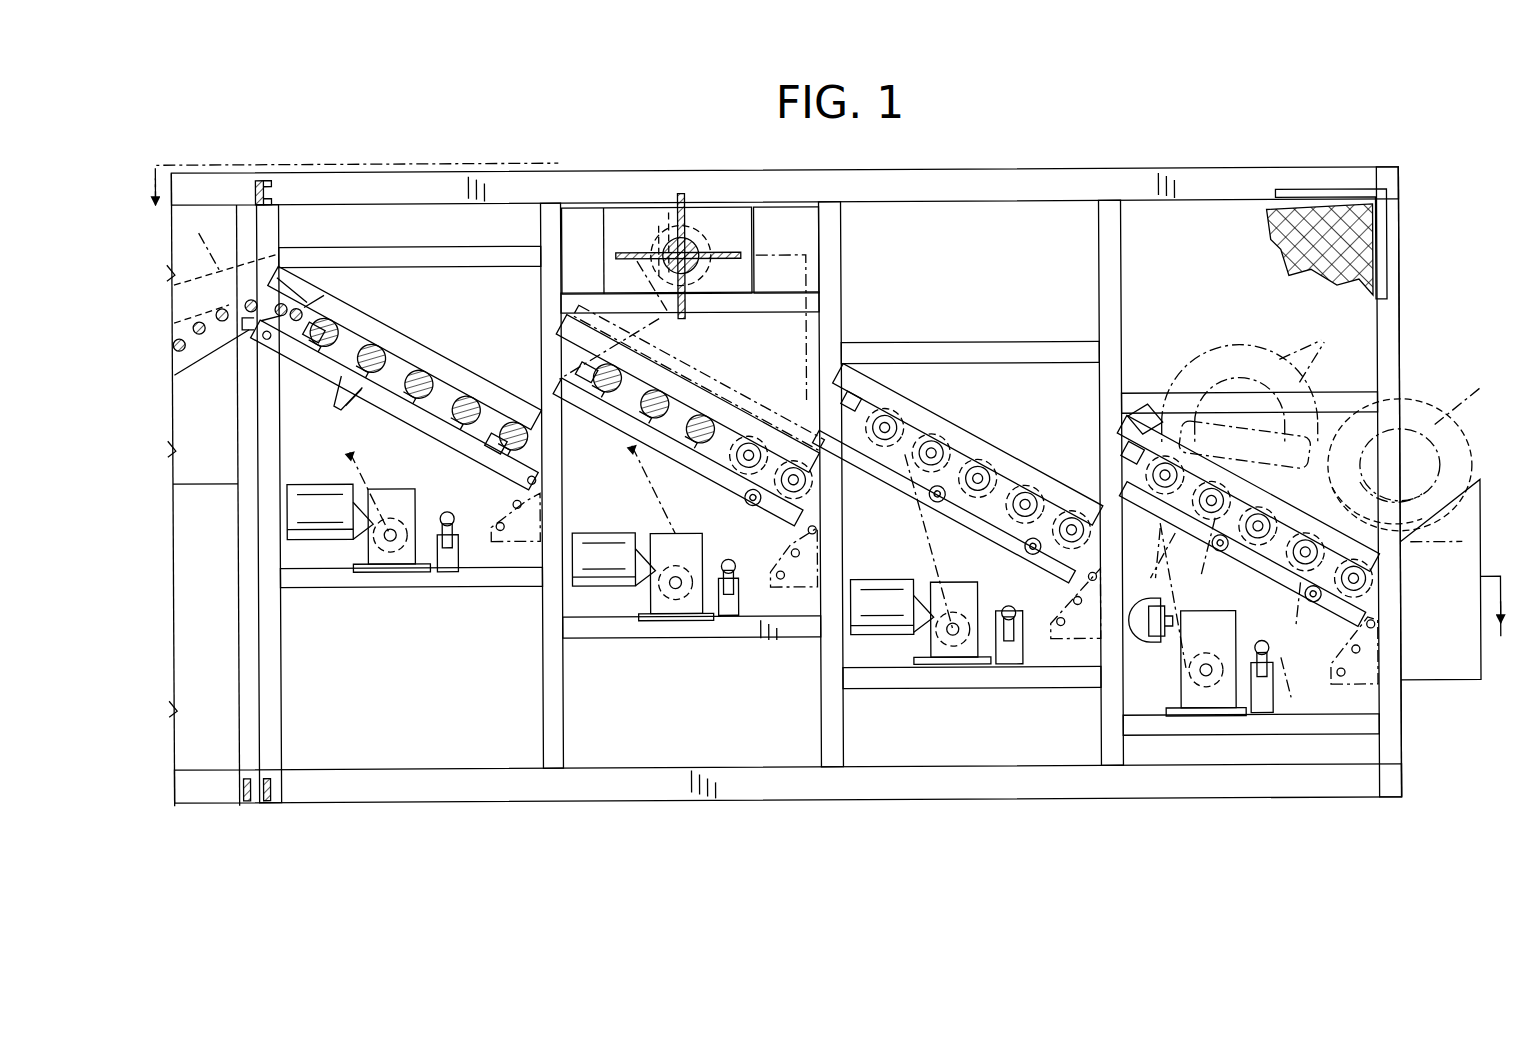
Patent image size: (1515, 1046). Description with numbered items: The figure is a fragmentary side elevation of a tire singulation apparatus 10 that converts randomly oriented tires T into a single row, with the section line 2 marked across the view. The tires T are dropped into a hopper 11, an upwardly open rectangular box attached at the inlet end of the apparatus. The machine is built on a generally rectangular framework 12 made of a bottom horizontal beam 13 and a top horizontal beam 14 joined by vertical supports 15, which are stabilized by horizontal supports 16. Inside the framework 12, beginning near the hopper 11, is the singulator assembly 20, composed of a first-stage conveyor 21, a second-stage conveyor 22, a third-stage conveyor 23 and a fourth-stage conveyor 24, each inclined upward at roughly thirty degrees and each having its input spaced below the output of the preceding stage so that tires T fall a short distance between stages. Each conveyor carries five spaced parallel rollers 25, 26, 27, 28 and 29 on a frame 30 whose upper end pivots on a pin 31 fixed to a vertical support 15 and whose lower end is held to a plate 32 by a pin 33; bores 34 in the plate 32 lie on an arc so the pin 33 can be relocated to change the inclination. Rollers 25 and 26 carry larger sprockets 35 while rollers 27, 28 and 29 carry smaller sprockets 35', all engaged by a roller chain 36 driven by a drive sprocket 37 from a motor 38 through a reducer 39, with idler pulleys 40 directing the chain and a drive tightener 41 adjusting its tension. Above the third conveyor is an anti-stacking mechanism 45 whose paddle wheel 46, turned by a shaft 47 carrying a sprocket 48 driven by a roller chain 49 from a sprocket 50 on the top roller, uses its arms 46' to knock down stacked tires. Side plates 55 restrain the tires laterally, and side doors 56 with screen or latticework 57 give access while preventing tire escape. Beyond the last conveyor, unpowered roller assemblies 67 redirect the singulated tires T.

The tire singulation apparatus 10 is at (1115, 120).
The hopper 11 is at (1450, 688).
The framework 12 is at (1240, 170).
The bottom horizontal beam 13 is at (862, 790).
The top horizontal beam 14 is at (382, 186).
The vertical supports 15 is at (548, 238).
The horizontal supports 16 is at (412, 250).
The singulator assembly 20 is at (955, 282).
The first-stage conveyor 21 is at (1190, 440).
The second-stage conveyor 22 is at (946, 414).
The third-stage conveyor 23 is at (722, 398).
The fourth-stage conveyor 24 is at (400, 340).
The roller 25 is at (1375, 592).
The roller 26 is at (1208, 625).
The roller 27 is at (1200, 559).
The roller 28 is at (1141, 553).
The roller 29 is at (1148, 410).
The frame 30 is at (1295, 612).
The pin 31 is at (1082, 456).
The plate 32 is at (1375, 667).
The pin 33 is at (1375, 627).
The bores 34 is at (1355, 658).
The larger diameter sprockets 35 is at (1323, 525).
The smaller diameter sprockets 35' is at (1081, 395).
The roller chain 36 is at (1180, 655).
The drive sprocket 37 is at (1206, 682).
The motor 38 is at (1140, 632).
The reducer 39 is at (1200, 700).
The idler pulleys 40 is at (1235, 598).
The drive tightener 41 is at (1290, 709).
The anti-stacking mechanism 45 is at (718, 215).
The paddle wheel 46 is at (634, 209).
The arms 46' is at (710, 183).
The shaft 47 is at (674, 247).
The sprocket 48 is at (700, 192).
The roller chain 49 is at (676, 326).
The sprocket 50 is at (600, 345).
The side plates 55 is at (470, 355).
The side doors 56 is at (1374, 180).
The screen or latticework 57 is at (1308, 206).
The roller assemblies 67 is at (298, 302).
The tires T is at (836, 376).
The section line 2- 2 is at (832, 398).